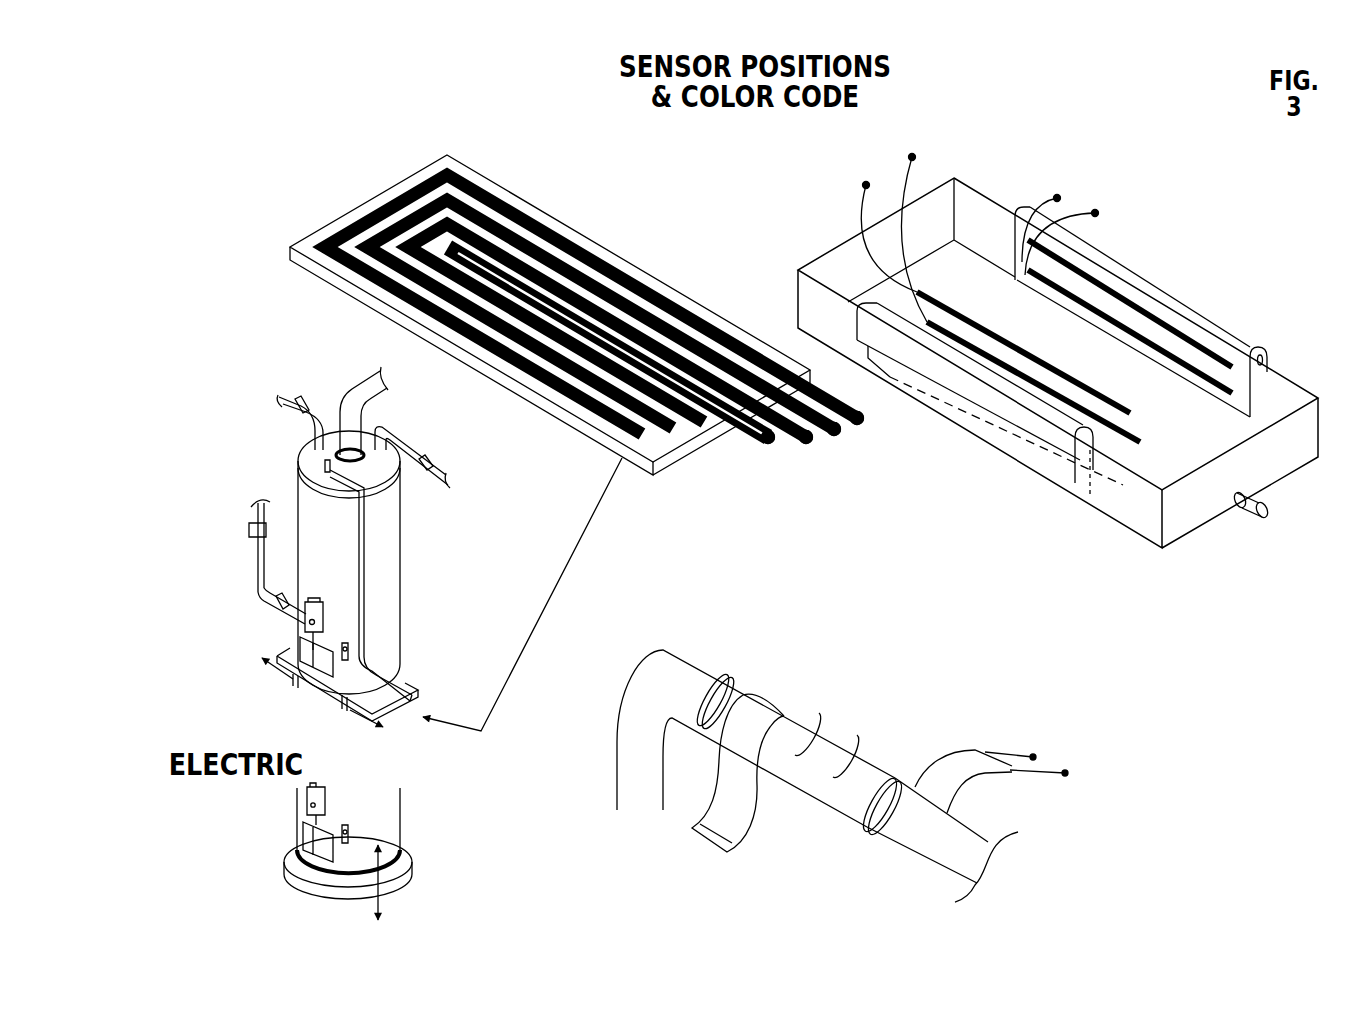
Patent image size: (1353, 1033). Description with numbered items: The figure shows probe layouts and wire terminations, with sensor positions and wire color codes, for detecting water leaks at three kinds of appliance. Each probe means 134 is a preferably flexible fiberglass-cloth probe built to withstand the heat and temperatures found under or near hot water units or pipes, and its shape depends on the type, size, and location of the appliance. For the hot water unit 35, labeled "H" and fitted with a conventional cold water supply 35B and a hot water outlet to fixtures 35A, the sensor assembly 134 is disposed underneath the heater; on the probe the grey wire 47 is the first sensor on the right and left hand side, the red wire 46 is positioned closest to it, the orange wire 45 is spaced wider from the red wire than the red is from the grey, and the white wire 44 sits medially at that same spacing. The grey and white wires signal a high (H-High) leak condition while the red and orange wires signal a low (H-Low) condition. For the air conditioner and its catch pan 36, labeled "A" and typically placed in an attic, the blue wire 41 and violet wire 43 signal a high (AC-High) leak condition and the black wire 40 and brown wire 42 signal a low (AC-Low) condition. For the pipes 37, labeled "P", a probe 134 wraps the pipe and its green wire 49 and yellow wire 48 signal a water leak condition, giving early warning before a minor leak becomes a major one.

The hot water heater 35 is at (399, 484).
The hot water outlet to fixtures 35A is at (243, 456).
The cold water supply 35B is at (448, 522).
The air conditioner catch pan 36 is at (1067, 363).
The pipes 37 is at (817, 752).
The black wire 40 is at (827, 237).
The blue wire 41 is at (960, 217).
The brown wire 42 is at (1086, 178).
The violet wire 43 is at (1129, 206).
The white wire 44 is at (717, 479).
The orange wire 45 is at (779, 497).
The red wire 46 is at (860, 488).
The gray wire 47 is at (905, 466).
The yellow wire 48 is at (1045, 711).
The green wire 49 is at (1064, 820).
The probe means 134 is at (803, 503).